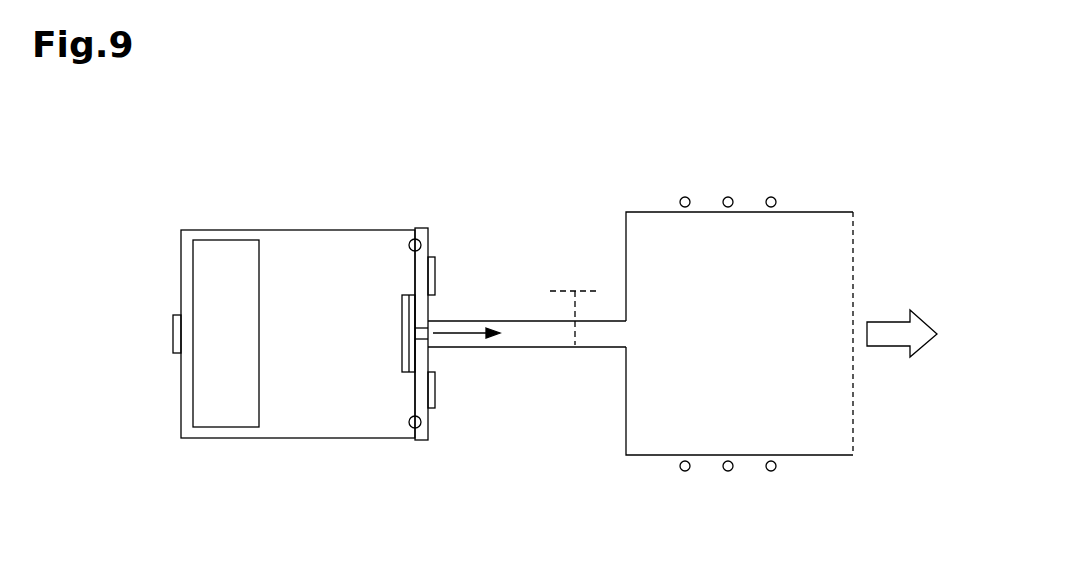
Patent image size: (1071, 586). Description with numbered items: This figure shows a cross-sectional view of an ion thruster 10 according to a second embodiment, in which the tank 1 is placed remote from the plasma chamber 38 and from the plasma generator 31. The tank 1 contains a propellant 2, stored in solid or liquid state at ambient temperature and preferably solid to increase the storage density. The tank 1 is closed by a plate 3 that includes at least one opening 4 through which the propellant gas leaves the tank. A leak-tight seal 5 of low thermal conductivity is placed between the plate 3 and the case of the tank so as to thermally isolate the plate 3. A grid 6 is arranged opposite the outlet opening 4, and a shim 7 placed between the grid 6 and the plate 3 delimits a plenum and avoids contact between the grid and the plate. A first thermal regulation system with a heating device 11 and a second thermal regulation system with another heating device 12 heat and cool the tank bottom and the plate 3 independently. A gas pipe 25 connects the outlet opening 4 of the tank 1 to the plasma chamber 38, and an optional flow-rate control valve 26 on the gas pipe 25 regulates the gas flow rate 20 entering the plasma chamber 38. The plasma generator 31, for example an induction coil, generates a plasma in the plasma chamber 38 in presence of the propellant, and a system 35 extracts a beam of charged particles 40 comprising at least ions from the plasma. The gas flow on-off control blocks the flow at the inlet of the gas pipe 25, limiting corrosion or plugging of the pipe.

The tank 1 is at (211, 438).
The propellant 2 is at (235, 248).
The plate 3 is at (421, 232).
The opening 4 is at (438, 323).
The leak-tight seal 5 is at (409, 245).
The grid 6 is at (402, 342).
The shim 7 is at (410, 372).
The ion thruster 10 is at (340, 484).
The heating device 11 is at (173, 325).
The heating device 12 is at (435, 267).
The gas flow rate 20 is at (462, 347).
The gas pipe 25 is at (537, 348).
The flow-rate control valve 26 is at (568, 291).
The plasma generator 31 is at (771, 197).
The extraction system 35 is at (853, 243).
The plasma chamber 38 is at (642, 456).
The beam of charged particles 40 is at (883, 322).